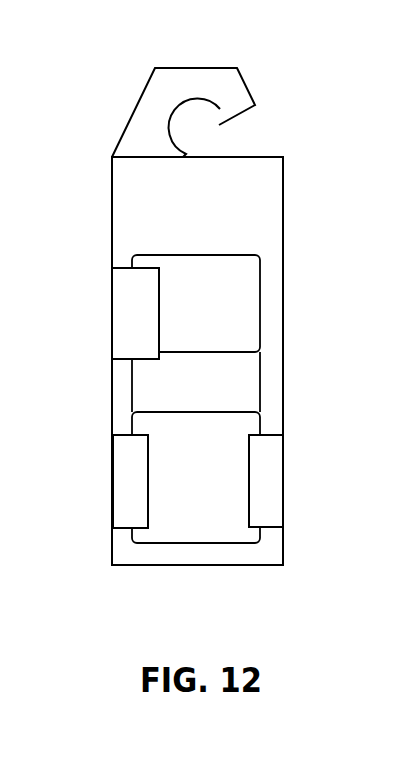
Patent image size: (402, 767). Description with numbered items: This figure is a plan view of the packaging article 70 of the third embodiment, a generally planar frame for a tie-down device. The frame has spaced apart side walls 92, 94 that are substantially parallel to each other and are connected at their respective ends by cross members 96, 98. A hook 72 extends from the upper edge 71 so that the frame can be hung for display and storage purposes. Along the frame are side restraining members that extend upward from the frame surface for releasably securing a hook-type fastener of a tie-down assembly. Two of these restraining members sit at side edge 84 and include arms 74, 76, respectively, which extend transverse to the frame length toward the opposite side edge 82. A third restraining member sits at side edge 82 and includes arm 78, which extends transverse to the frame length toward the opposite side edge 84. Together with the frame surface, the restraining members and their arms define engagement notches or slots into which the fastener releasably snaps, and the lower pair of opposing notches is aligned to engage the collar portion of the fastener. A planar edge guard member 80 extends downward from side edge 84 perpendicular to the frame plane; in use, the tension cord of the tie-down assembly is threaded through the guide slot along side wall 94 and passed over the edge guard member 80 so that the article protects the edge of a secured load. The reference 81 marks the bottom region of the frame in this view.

The packaging article 70 is at (316, 331).
The upper edge 71 is at (272, 157).
The hook 72 is at (243, 76).
The arm 74 is at (125, 303).
The arm 76 is at (125, 477).
The arm 78 is at (270, 483).
The edge guard member 80 is at (394, 215).
The bottom edge 81 is at (240, 567).
The side edge 82 is at (283, 410).
The side edge 84 is at (112, 403).
The side wall 92 is at (270, 372).
The side wall 94 is at (122, 375).
The cross member 96 is at (147, 189).
The cross member 98 is at (135, 555).